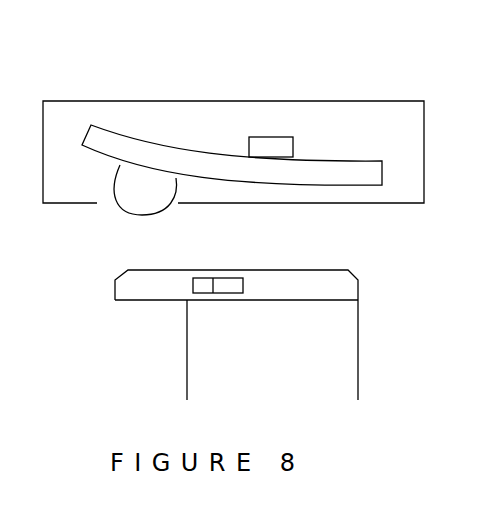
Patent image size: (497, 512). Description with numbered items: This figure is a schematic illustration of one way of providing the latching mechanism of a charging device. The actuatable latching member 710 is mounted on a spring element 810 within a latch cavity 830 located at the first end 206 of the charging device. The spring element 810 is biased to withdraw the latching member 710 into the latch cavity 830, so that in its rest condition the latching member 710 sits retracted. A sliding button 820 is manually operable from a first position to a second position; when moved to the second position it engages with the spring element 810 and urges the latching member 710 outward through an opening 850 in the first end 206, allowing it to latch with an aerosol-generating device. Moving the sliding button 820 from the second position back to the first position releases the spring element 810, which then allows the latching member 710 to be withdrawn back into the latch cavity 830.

The spring element 810 is at (157, 155).
The sliding button 820 is at (273, 145).
The latch cavity 830 is at (362, 127).
The actuatable latching member 710 is at (143, 203).
The opening 850 is at (110, 203).
The first end 206 is at (313, 203).